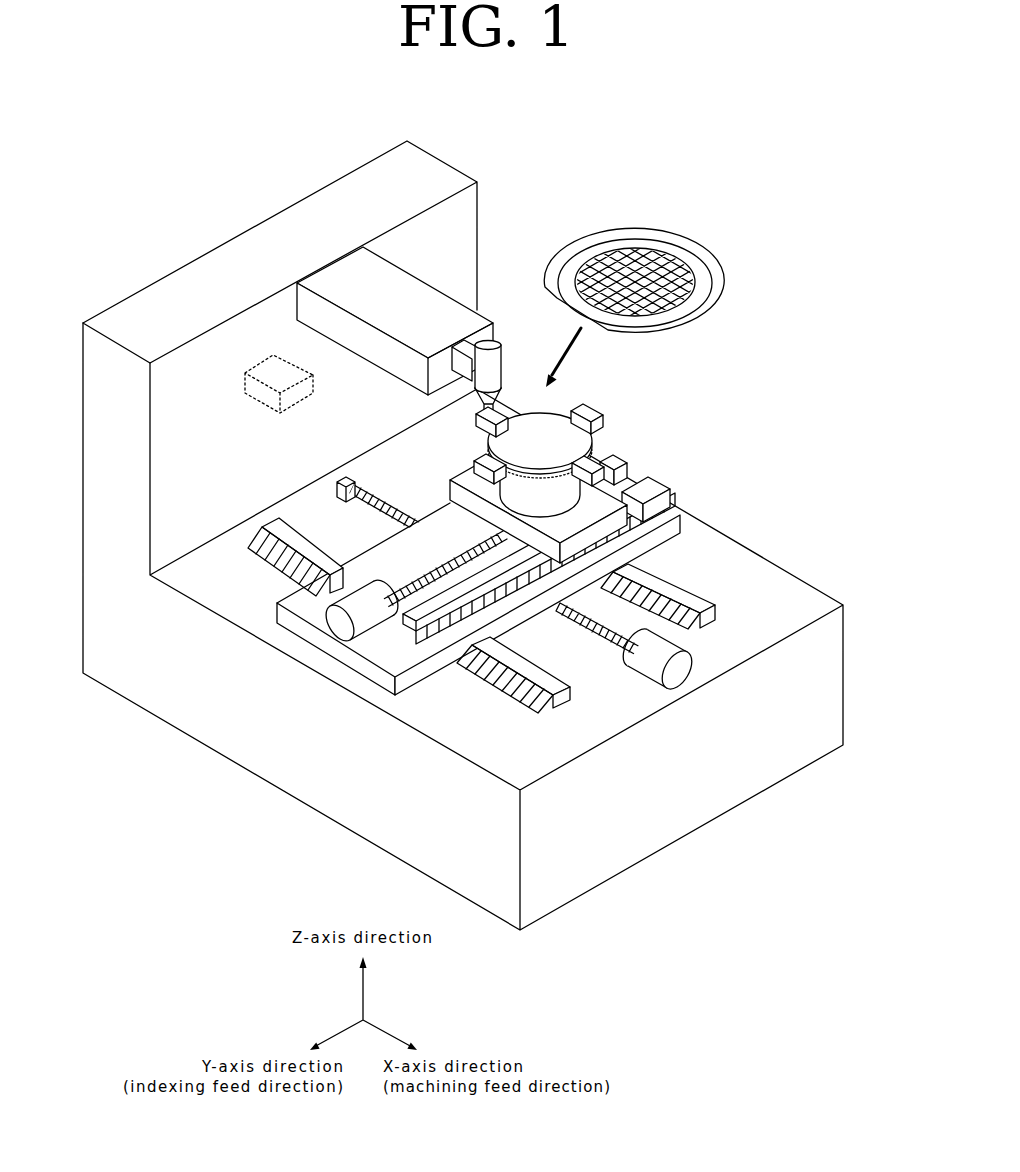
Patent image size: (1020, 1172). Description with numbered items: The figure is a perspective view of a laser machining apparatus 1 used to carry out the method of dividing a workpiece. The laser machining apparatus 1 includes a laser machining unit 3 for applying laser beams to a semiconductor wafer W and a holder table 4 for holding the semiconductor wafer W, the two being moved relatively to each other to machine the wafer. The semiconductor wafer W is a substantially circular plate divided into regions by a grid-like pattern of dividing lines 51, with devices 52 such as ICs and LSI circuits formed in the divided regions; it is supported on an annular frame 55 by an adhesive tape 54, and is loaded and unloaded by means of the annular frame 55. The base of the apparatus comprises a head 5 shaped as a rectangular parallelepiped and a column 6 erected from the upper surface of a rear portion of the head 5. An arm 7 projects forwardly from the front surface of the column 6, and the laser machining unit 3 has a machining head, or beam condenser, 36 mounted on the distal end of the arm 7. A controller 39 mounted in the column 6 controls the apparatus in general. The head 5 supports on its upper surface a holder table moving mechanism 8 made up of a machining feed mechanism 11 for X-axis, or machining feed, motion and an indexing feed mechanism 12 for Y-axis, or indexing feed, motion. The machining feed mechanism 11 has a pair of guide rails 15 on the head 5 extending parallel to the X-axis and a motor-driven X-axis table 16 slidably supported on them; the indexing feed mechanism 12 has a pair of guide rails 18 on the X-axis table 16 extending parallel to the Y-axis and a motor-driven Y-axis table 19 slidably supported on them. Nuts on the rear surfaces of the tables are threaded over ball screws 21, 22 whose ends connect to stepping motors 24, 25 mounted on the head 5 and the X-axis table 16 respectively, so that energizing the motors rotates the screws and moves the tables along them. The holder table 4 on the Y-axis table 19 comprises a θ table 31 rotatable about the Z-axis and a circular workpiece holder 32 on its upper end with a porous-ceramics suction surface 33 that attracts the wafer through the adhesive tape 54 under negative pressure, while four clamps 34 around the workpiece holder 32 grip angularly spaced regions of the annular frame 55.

The laser machining apparatus 1 is at (463, 528).
The laser machining unit 3 is at (488, 342).
The holder table 4 is at (553, 468).
The head 5 is at (793, 582).
The column 6 is at (428, 166).
The arm 7 is at (415, 283).
The holder table moving mechanism 8 is at (490, 575).
The machining feed mechanism 11 is at (488, 579).
The indexing feed mechanism 12 is at (511, 544).
The guide rails 15 is at (552, 683).
The X-axis table 16 is at (295, 603).
The guide rails 18 is at (368, 556).
The Y-axis table 19 is at (470, 478).
The ball screw 21 is at (628, 642).
The ball screw 22 is at (458, 552).
The stepping motor 24 is at (680, 676).
The stepping motor 25 is at (365, 620).
The θ table 31 is at (560, 493).
The workpiece holder 32 is at (540, 425).
The suction surface 33 is at (557, 422).
The clamps 34 is at (590, 413).
The machining head (beam condenser) 36 is at (485, 344).
The controller 39 is at (275, 373).
The dividing lines 51 is at (683, 266).
The devices 52 is at (636, 250).
The adhesive tape 54 is at (703, 280).
The annular frame 55 is at (600, 237).
The semiconductor wafer W is at (636, 281).